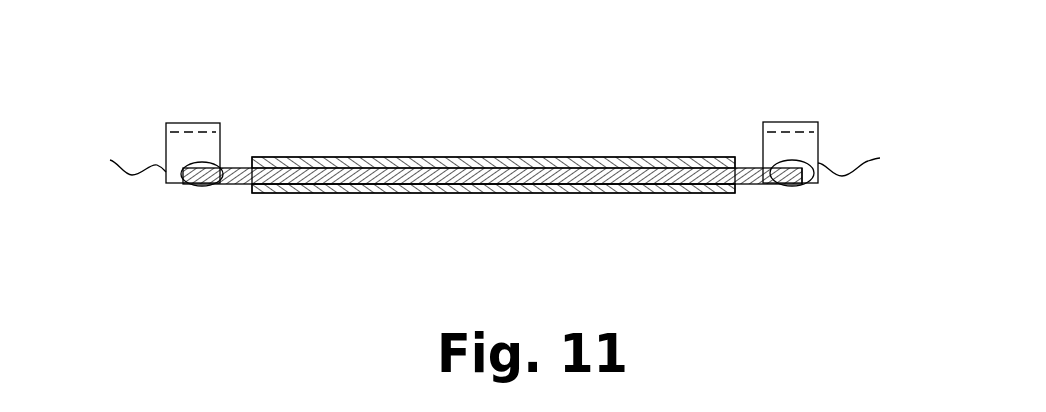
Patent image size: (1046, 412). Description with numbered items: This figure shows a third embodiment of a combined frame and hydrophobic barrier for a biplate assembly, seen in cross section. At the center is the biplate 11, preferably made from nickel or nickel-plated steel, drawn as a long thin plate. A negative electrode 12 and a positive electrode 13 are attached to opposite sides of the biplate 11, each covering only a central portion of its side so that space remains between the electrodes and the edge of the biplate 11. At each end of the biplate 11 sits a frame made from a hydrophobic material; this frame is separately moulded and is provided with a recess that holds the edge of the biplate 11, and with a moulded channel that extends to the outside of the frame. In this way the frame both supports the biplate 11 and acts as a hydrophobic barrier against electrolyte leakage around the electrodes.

The biplate 11 is at (441, 158).
The negative electrode 12 is at (538, 158).
The positive electrode 13 is at (568, 193).